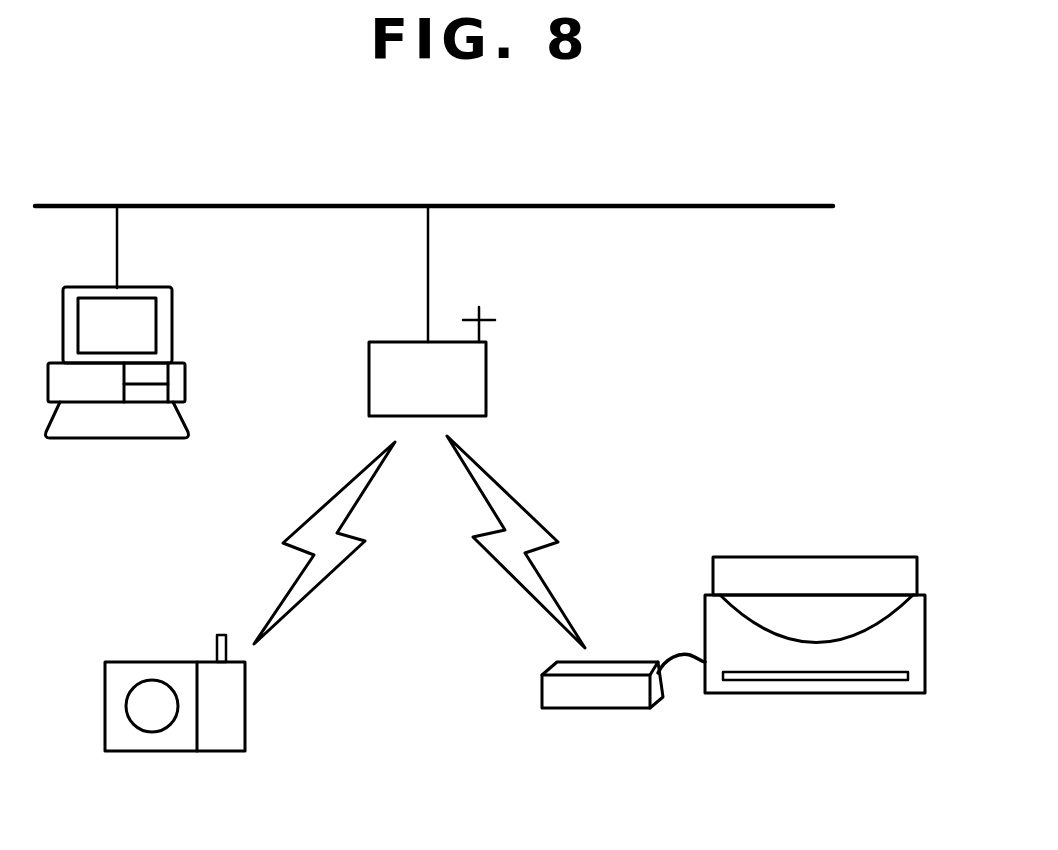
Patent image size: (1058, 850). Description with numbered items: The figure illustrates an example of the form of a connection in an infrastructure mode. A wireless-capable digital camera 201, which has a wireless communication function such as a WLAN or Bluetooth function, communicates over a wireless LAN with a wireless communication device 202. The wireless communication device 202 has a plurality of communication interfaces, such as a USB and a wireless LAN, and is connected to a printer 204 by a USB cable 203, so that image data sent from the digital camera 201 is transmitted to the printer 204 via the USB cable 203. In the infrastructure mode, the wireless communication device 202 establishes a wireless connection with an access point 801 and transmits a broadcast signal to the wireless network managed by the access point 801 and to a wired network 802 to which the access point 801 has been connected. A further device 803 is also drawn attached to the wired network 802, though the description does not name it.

The wired network 802 is at (742, 204).
The computer 803 is at (173, 320).
The access point 801 is at (486, 372).
The digital camera 201 is at (157, 751).
The wireless communication device 202 is at (597, 708).
The USB cable 203 is at (675, 657).
The printer 204 is at (817, 557).